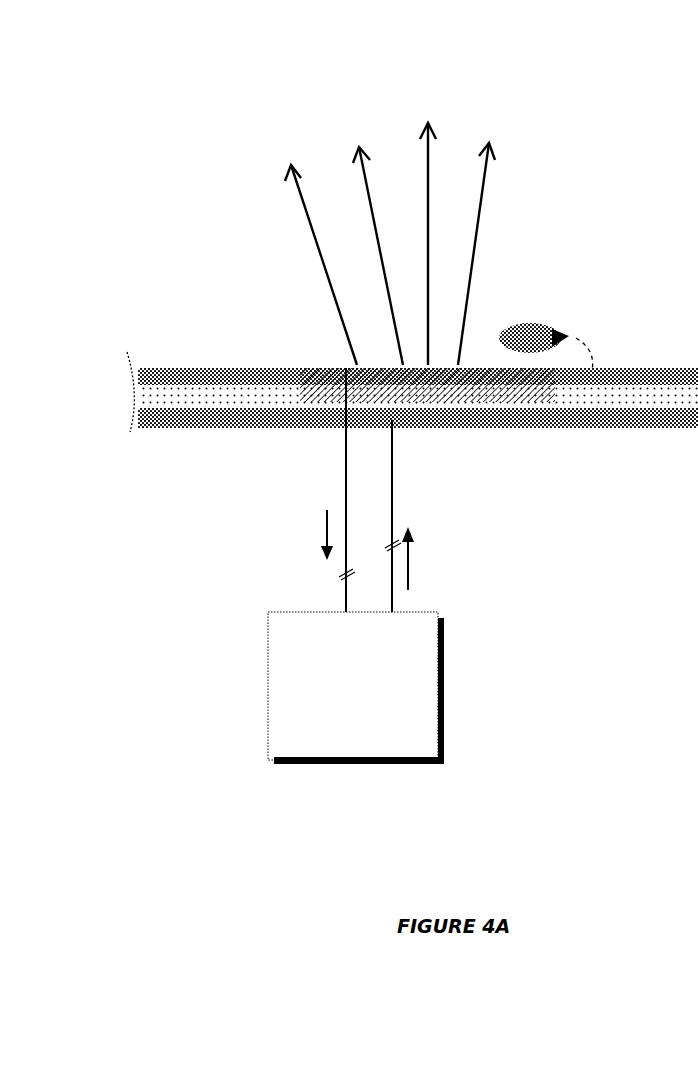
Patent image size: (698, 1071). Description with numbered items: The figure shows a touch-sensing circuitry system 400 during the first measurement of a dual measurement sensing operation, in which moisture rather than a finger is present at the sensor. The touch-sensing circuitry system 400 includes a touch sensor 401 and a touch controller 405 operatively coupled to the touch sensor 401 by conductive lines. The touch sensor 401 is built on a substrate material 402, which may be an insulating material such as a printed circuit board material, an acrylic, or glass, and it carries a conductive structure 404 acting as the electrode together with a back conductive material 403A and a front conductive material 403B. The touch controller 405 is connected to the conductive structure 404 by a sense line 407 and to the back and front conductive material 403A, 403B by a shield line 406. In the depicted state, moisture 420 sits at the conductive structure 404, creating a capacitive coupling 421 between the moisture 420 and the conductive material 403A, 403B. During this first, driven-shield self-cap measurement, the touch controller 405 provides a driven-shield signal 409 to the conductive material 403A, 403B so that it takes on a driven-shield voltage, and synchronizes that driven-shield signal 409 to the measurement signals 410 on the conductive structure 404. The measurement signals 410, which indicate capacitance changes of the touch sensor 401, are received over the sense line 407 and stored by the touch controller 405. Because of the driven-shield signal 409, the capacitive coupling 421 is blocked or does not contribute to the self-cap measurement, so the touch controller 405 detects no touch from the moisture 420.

The touch-sensing circuitry system 400 is at (575, 55).
The touch sensor 401 is at (648, 215).
The substrate material 402 is at (259, 408).
The back conductive material 403A is at (500, 422).
The front conductive material 403B is at (216, 372).
The conductive structure 404 is at (427, 385).
The touch controller 405 is at (336, 723).
The shield line 406 is at (394, 510).
The sense line 407 is at (345, 478).
The driven-shield signal 409 is at (411, 573).
The measurement signals 410 is at (325, 546).
The moisture 420 is at (538, 322).
The capacitive coupling 421 is at (583, 340).